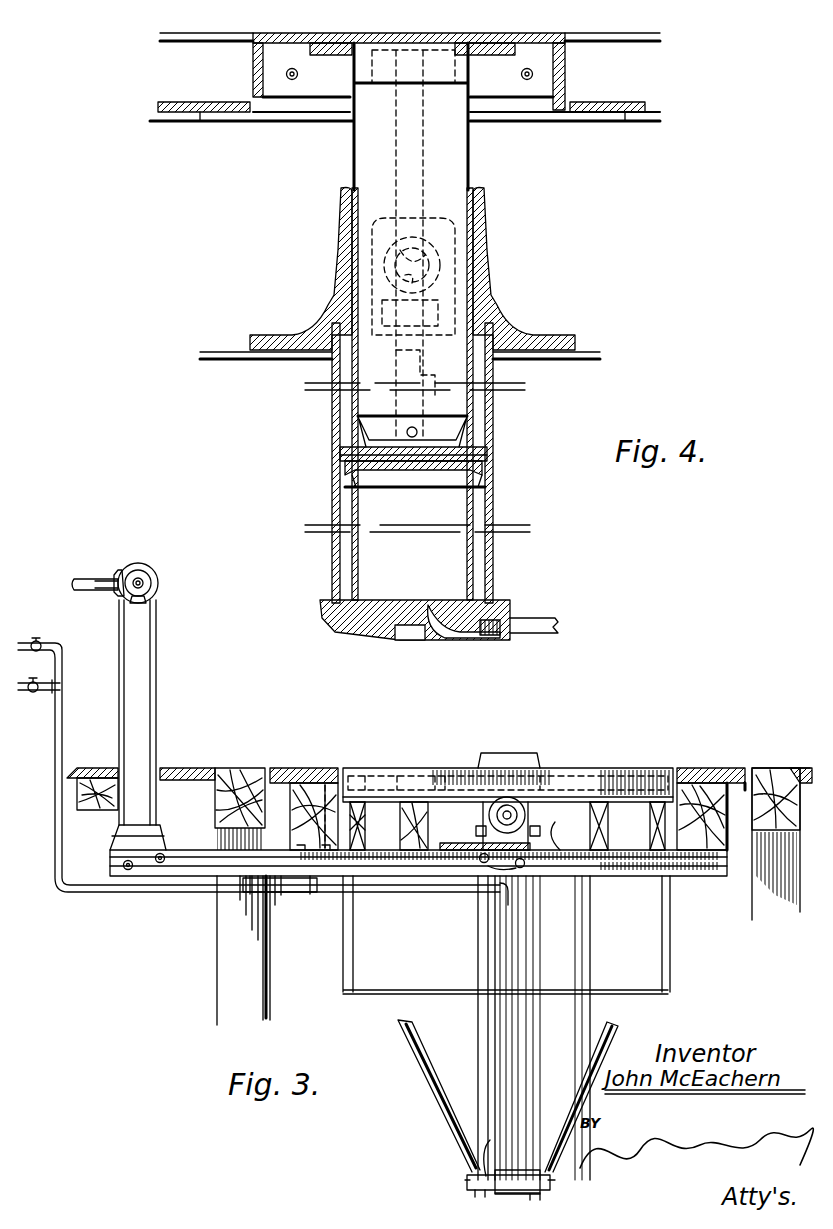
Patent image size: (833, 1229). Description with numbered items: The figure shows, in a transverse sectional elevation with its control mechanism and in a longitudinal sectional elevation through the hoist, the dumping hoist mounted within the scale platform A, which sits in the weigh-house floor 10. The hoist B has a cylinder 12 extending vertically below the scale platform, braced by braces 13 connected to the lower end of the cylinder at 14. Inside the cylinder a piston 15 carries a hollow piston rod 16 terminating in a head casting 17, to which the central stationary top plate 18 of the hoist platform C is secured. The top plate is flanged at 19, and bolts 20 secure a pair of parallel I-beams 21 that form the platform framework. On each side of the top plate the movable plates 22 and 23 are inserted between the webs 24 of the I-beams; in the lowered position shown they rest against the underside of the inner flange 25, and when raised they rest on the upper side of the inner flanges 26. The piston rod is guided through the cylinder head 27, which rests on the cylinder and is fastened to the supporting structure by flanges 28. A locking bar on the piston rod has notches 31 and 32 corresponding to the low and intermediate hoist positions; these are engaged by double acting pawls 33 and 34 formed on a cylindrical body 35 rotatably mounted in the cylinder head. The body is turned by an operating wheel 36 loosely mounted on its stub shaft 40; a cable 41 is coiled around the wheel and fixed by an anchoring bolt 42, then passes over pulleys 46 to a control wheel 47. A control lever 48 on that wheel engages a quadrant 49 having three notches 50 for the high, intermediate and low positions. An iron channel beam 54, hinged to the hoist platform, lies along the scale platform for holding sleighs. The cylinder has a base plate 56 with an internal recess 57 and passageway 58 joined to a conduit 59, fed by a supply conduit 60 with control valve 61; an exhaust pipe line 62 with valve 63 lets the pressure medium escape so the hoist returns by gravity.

In FIG. 3, the weigh-house floor 10 is at (205, 770).
In FIG. 4, the cylinder 12 is at (470, 175).
In FIG. 3, the cylinder 12 is at (522, 1028).
In FIG. 3, the braces 13 is at (422, 1070).
In FIG. 3, the brace connection 14 is at (466, 1183).
In FIG. 4, the piston 15 is at (489, 455).
In FIG. 4, the piston rod 16 is at (350, 170).
In FIG. 4, the head casting 17 is at (345, 56).
In FIG. 4, the central stationary top plate 18 is at (522, 52).
In FIG. 4, the flange 19 is at (262, 70).
In FIG. 4, the bolts 20 is at (294, 81).
In FIG. 4, the I-beams 21 is at (241, 92).
In FIG. 4, the movable plate 22 is at (188, 102).
In FIG. 4, the movable plate 23 is at (645, 102).
In FIG. 4, the webs 24 is at (206, 90).
In FIG. 4, the inner flange 25 is at (190, 43).
In FIG. 4, the inner flange 26 is at (207, 114).
In FIG. 4, the cylinder head 27 is at (340, 240).
In FIG. 3, the cylinder head 27 is at (532, 830).
In FIG. 4, the flanges 28 is at (272, 336).
In FIG. 3, the flanges 28 is at (445, 836).
In FIG. 4, the notch 31 is at (390, 232).
In FIG. 4, the notch 32 is at (440, 358).
In FIG. 4, the double acting pawl 33 is at (400, 280).
In FIG. 4, the double acting pawl 34 is at (445, 250).
In FIG. 4, the cylindrical body 35 is at (440, 280).
In FIG. 3, the operating wheel 36 is at (489, 816).
In FIG. 3, the stub shaft 40 is at (522, 812).
In FIG. 3, the cable 41 is at (467, 862).
In FIG. 3, the anchoring bolt 42 is at (520, 858).
In FIG. 3, the pulleys 46 is at (160, 864).
In FIG. 3, the control wheel 47 is at (160, 578).
In FIG. 3, the control lever 48 is at (81, 580).
In FIG. 3, the quadrant 49 is at (140, 566).
In FIG. 3, the notches 50 is at (116, 574).
In FIG. 3, the iron beam 54 is at (516, 755).
In FIG. 4, the base plate 56 is at (386, 612).
In FIG. 3, the base plate 56 is at (470, 1172).
In FIG. 4, the internal recess 57 is at (446, 615).
In FIG. 4, the passageway 58 is at (488, 637).
In FIG. 4, the conduit 59 is at (532, 624).
In FIG. 3, the conduit 59 is at (500, 1194).
In FIG. 3, the supply conduit 60 is at (50, 646).
In FIG. 3, the control valve 61 is at (30, 640).
In FIG. 3, the exhaust pipe line 62 is at (46, 693).
In FIG. 3, the valve 63 is at (33, 693).
In FIG. 3, the scale platform A is at (422, 765).
In FIG. 4, the hoist B is at (475, 205).
In FIG. 3, the hoist B is at (522, 950).
In FIG. 4, the hoist platform C is at (272, 62).